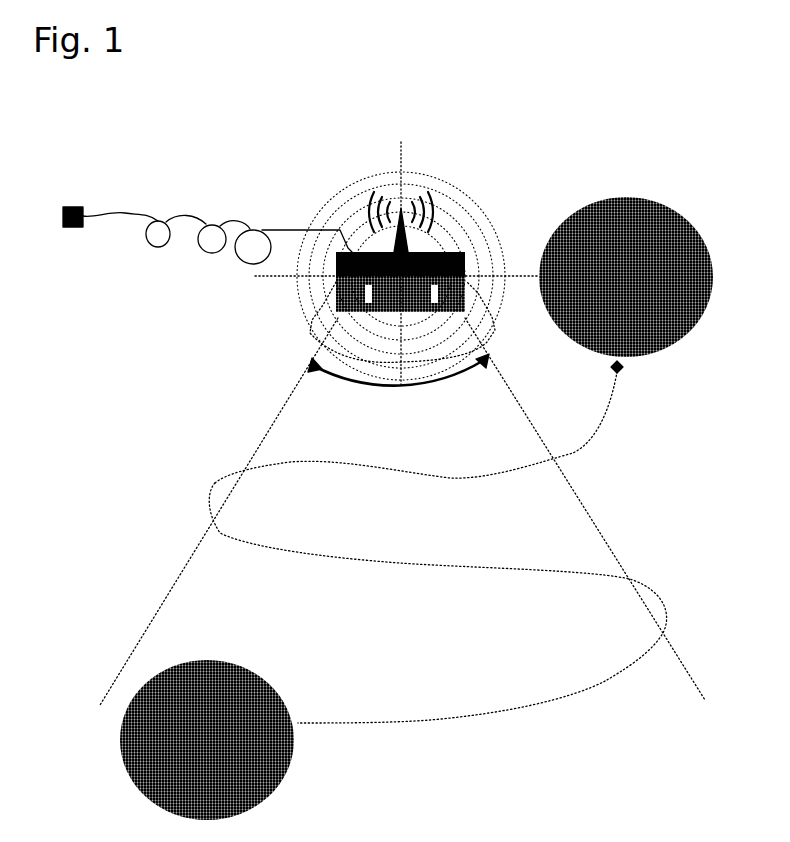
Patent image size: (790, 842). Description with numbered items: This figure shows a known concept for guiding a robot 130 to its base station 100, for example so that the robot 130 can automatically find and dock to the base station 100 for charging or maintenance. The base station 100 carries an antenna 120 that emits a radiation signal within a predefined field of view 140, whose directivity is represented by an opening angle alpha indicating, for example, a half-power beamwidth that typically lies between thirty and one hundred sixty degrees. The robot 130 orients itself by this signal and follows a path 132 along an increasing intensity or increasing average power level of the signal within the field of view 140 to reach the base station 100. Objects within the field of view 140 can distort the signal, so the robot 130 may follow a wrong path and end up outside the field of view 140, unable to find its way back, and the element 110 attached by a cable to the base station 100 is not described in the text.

The base station 100 is at (458, 178).
The power supply plug 110 is at (68, 204).
The antenna 120 is at (400, 210).
The robot 130 is at (416, 508).
The path 132 is at (425, 717).
The field of view 140 is at (210, 580).